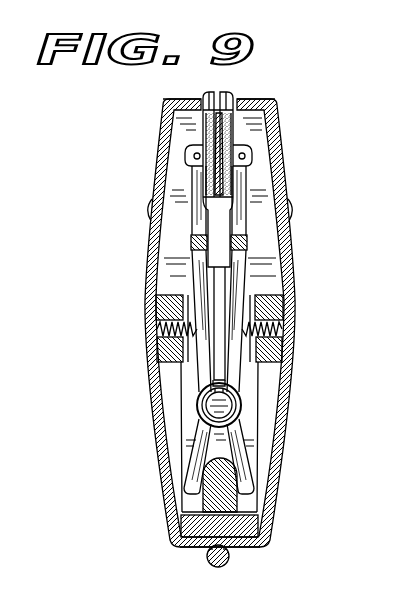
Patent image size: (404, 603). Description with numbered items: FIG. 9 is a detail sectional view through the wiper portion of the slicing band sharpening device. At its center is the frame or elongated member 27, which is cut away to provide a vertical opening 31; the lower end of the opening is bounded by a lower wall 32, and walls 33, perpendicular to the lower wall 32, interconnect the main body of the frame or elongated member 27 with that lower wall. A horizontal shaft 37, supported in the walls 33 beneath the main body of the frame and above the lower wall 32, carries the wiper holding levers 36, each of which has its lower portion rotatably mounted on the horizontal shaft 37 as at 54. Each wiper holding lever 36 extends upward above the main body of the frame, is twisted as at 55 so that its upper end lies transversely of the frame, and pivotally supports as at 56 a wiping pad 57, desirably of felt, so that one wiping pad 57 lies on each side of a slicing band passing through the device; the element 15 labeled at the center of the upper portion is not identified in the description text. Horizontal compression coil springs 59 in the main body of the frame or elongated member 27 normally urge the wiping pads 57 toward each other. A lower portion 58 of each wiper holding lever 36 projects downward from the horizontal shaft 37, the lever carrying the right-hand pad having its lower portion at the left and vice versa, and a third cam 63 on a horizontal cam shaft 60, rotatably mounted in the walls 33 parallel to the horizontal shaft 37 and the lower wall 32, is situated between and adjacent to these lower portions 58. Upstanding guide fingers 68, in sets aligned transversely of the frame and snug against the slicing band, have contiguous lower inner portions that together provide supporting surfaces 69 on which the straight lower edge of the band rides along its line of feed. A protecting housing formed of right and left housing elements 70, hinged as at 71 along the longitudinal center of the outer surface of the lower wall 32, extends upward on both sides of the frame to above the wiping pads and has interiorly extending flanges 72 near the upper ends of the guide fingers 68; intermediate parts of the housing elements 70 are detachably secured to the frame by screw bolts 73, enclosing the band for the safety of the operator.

The central stem 15 is at (234, 140).
The frame or elongated member 27 is at (283, 305).
The vertical opening 31 is at (152, 312).
The lower wall 32 is at (245, 546).
The walls 33 is at (256, 432).
The wiper holding lever 36 is at (203, 276).
The horizontal shaft 37 is at (231, 410).
The rotatable mounting 54 is at (200, 416).
The twist 55 is at (192, 238).
The pivotal support 56 is at (193, 155).
The wiping pad 57 is at (205, 135).
The lower portion 58 is at (186, 474).
The horizontal compression coil spring 59 is at (162, 338).
The horizontal cam shaft 60 is at (240, 498).
The third cam 63 is at (204, 500).
The guide fingers 68 is at (221, 97).
The supporting surfaces 69 is at (231, 175).
The housing element 70 is at (289, 388).
The hinge connection 71 is at (216, 566).
The interiorly extending flange 72 is at (191, 99).
The screw bolt 73 is at (152, 211).